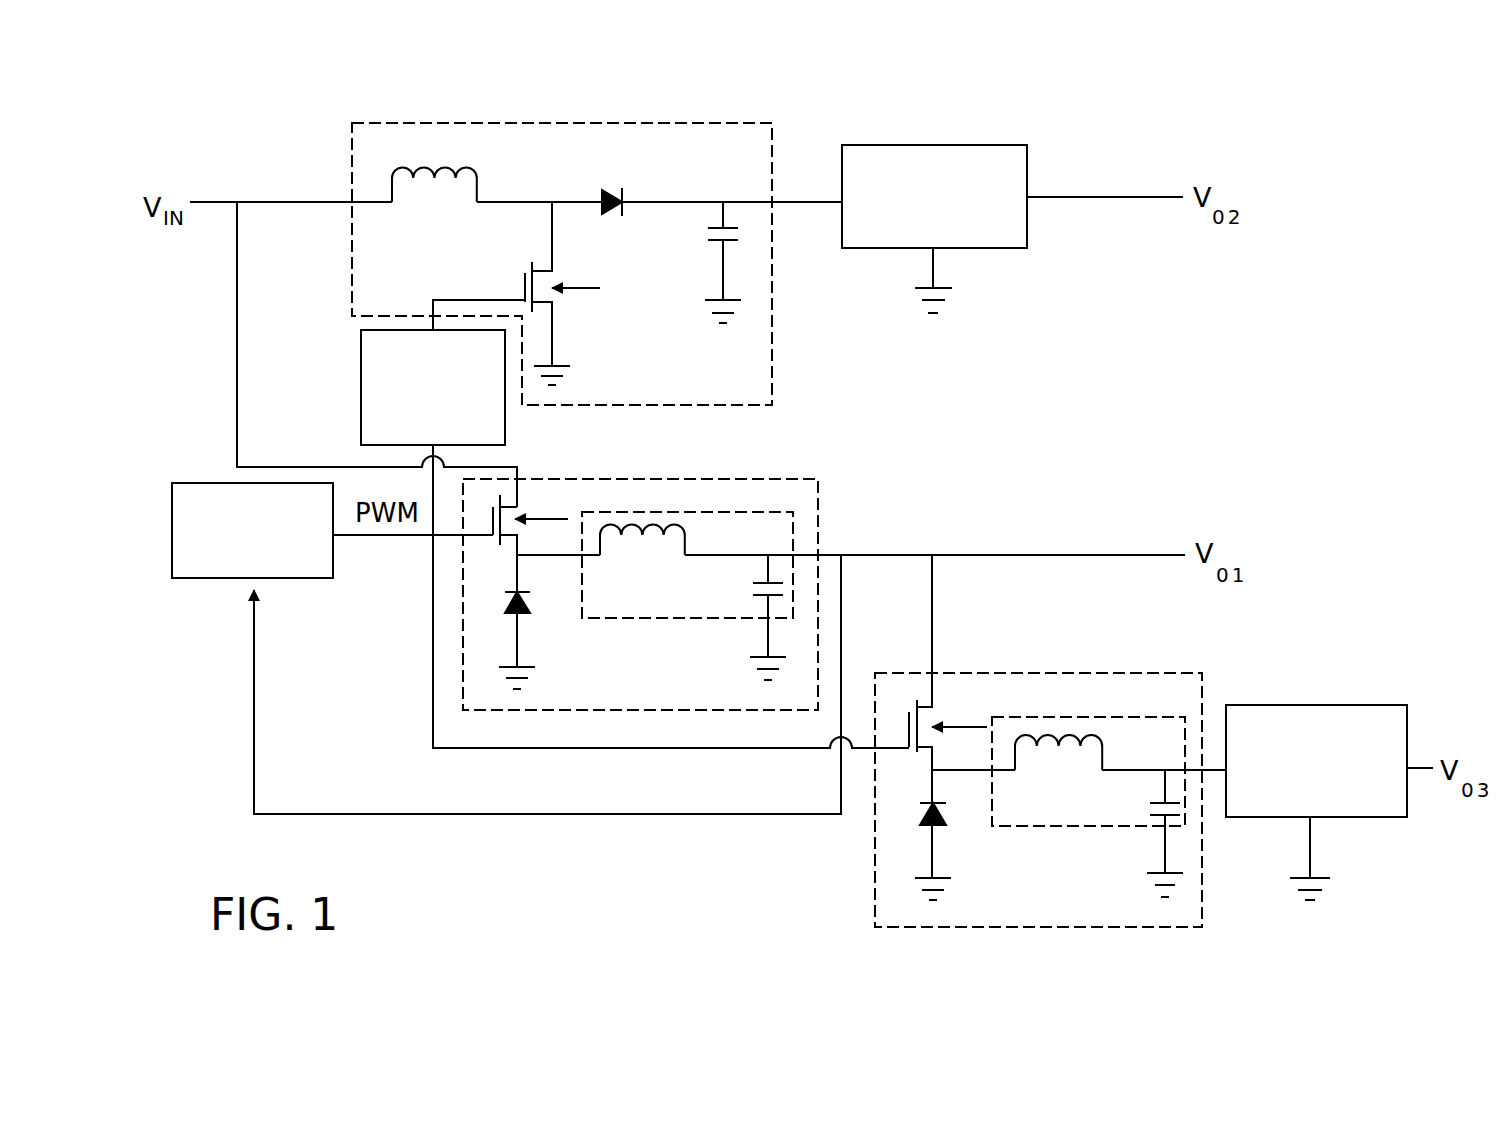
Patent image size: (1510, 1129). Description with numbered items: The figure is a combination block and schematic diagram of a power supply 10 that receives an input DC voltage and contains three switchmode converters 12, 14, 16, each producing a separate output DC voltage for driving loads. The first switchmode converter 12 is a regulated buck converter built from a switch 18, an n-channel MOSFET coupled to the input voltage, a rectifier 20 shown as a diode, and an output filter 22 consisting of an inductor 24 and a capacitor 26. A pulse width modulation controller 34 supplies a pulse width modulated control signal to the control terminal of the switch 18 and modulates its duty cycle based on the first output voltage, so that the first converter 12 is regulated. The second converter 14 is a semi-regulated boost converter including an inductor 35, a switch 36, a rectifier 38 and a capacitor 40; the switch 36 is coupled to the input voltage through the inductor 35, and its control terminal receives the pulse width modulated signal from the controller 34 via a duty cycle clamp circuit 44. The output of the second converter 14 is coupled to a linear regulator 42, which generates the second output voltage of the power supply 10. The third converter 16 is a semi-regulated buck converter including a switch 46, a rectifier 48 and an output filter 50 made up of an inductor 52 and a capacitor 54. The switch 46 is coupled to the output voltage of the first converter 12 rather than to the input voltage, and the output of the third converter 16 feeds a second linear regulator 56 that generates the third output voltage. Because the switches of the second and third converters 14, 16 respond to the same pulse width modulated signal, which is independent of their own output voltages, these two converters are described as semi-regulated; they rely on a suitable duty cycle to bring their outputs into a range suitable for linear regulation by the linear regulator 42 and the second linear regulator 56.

The power supply 10 is at (1130, 113).
The first switchmode converter 12 is at (780, 479).
The second converter 14 is at (663, 123).
The third converter 16 is at (875, 905).
The switch 18 is at (545, 512).
The rectifier 20 is at (525, 605).
The output filter 22 is at (673, 528).
The inductor 24 is at (632, 540).
The capacitor 26 is at (745, 590).
The PWM controller 34 is at (290, 578).
The inductor 35 is at (472, 172).
The switch 36 is at (560, 296).
The rectifier 38 is at (612, 196).
The capacitor 40 is at (708, 235).
The linear regulator 42 is at (912, 145).
The duty cycle clamp circuit 44 is at (361, 410).
The switch 46 is at (945, 722).
The rectifier 48 is at (940, 815).
The output filter 50 is at (1115, 717).
The inductor 52 is at (1045, 748).
The capacitor 54 is at (1142, 805).
The second linear regulator 56 is at (1330, 705).